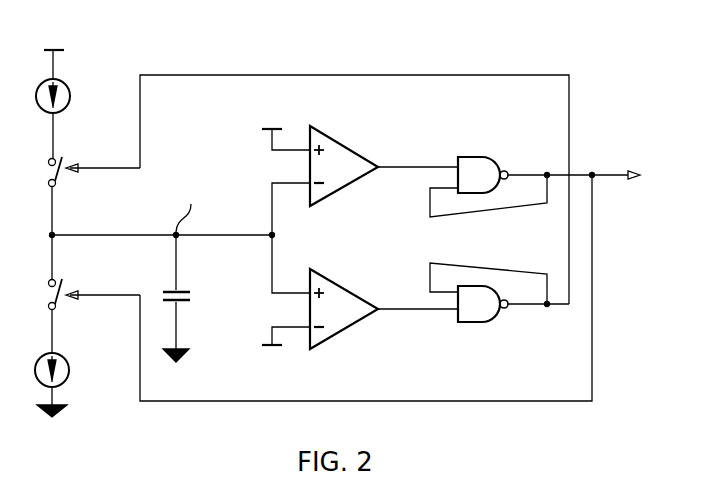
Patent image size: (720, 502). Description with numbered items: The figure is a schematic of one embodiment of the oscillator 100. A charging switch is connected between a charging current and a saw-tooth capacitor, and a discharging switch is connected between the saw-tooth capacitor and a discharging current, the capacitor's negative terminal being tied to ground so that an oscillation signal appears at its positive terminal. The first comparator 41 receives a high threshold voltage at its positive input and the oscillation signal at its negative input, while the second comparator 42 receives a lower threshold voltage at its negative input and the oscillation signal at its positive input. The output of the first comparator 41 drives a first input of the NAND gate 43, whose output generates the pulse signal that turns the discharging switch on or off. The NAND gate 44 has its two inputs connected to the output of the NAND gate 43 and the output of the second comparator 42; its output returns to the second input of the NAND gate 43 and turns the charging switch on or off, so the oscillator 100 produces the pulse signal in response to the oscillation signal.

The oscillator 100 is at (678, 71).
The first comparator 41 is at (358, 168).
The second comparator 42 is at (360, 306).
The NAND gate 43 is at (535, 178).
The NAND gate 44 is at (499, 292).